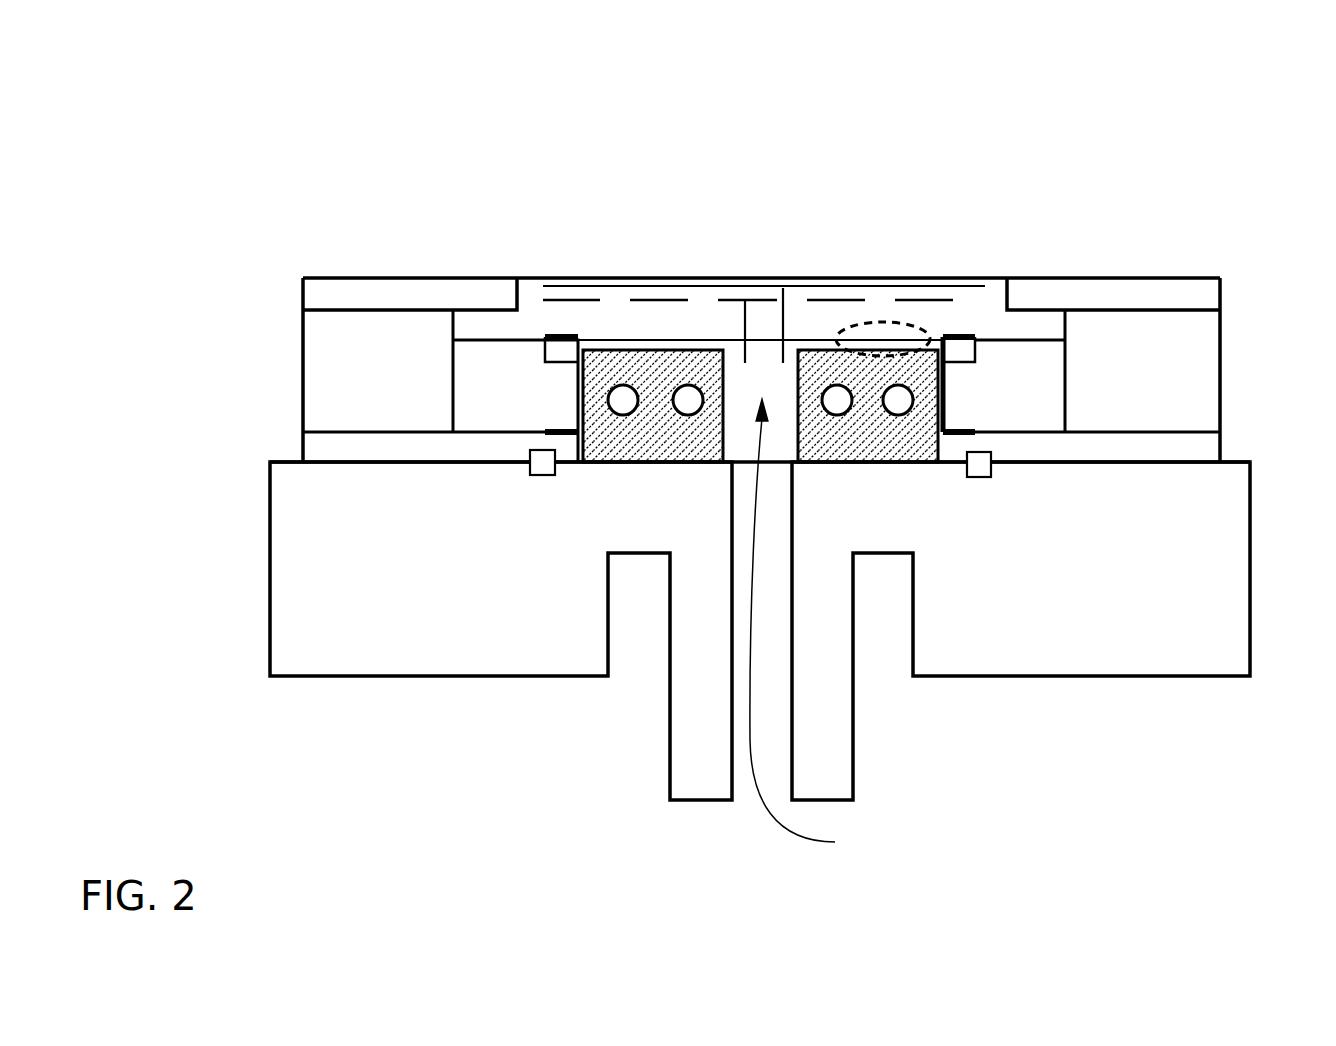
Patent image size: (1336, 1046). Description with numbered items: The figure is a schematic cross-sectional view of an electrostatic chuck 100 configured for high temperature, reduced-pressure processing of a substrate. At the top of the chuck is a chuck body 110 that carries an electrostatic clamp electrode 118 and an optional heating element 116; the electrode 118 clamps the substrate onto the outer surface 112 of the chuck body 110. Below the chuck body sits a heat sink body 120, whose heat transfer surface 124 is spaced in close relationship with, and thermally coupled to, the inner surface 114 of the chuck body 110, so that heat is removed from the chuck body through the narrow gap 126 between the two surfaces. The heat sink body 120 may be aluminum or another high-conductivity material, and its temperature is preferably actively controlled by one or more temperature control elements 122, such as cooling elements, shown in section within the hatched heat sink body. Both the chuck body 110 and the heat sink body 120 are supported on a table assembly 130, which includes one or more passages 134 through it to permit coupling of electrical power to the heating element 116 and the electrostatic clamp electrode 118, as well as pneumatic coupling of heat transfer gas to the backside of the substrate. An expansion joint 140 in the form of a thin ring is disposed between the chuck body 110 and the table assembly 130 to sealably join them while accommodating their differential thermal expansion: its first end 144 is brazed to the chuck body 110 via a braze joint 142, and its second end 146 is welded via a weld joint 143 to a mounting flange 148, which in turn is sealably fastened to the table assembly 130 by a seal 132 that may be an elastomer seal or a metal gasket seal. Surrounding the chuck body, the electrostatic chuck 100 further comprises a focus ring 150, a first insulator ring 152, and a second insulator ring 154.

The electrostatic chuck 100 is at (945, 93).
The chuck body 110 is at (568, 333).
The outer surface 112 is at (550, 284).
The inner surface 114 is at (712, 340).
The heating element 116 is at (760, 300).
The electrostatic clamp electrode 118 is at (906, 286).
The heat sink body 120 is at (683, 350).
The temperature control elements 122 is at (688, 385).
The heat transfer surface 124 is at (668, 350).
The gap 126 is at (822, 343).
The table assembly 130 is at (465, 562).
The seal 132 is at (985, 477).
The passages 134 is at (835, 842).
The expansion joint 140 is at (943, 337).
The braze joint 142 is at (960, 336).
The weld joint 143 is at (953, 428).
The first end 144 is at (953, 337).
The second end 146 is at (968, 430).
The mounting flange 148 is at (760, 447).
The focus ring 150 is at (438, 307).
The first insulator ring 152 is at (400, 382).
The second insulator ring 154 is at (539, 401).